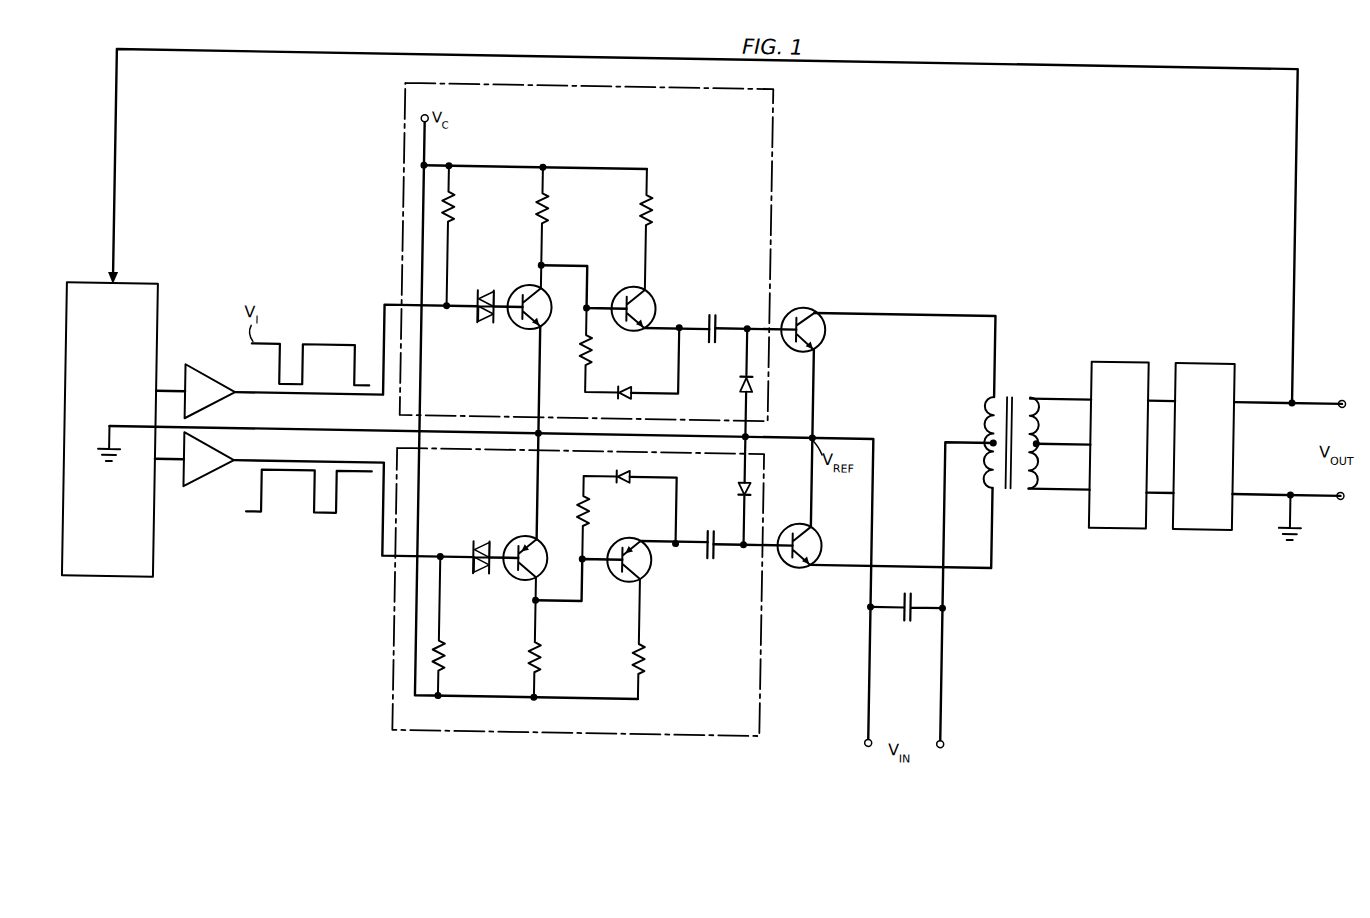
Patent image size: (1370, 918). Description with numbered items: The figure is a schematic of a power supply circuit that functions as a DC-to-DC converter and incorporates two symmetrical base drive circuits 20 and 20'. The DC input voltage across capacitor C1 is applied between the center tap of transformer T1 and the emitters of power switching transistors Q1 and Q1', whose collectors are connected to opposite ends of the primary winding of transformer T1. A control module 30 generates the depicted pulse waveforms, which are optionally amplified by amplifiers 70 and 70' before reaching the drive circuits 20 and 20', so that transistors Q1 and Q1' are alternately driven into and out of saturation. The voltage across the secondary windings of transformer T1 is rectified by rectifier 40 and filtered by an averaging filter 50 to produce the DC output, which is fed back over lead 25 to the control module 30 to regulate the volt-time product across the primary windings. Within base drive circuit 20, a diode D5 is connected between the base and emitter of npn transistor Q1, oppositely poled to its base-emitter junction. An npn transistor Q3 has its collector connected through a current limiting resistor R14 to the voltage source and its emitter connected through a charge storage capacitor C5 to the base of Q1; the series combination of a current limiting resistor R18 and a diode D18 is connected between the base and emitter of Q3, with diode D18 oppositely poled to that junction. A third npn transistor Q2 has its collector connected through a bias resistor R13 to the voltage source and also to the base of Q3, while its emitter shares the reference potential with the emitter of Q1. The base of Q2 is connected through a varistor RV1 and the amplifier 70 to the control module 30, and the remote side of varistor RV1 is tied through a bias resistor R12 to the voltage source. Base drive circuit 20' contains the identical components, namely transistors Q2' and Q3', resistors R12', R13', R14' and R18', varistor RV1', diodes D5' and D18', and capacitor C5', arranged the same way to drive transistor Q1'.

The base drive circuit 20 is at (618, 302).
The base drive circuit 20' is at (604, 603).
The lead 25 is at (970, 59).
The control module 30 is at (148, 293).
The rectifier 40 is at (1118, 522).
The averaging filter 50 is at (1204, 522).
The amplifier 70 is at (205, 392).
The amplifier 70' is at (200, 467).
The power switching transistor Q1 is at (803, 316).
The power switching transistor Q1' is at (821, 545).
The npn transistor Q2 is at (524, 296).
The npn transistor Q2' is at (514, 570).
The npn transistor Q3 is at (648, 296).
The npn transistor Q3' is at (647, 569).
The bias resistor R12 is at (466, 236).
The bias resistor R12' is at (459, 627).
The bias resistor R13 is at (559, 216).
The bias resistor R13' is at (555, 649).
The current limiting resistor R14 is at (664, 230).
The current limiting resistor R14' is at (659, 639).
The current limiting resistor R18 is at (603, 350).
The current limiting resistor R18' is at (603, 518).
The varistor RV1 is at (483, 324).
The varistor RV1' is at (479, 536).
The diode D5 is at (733, 382).
The diode D5' is at (732, 490).
The diode D18 is at (648, 371).
The diode D18' is at (648, 500).
The capacitor C5 is at (727, 312).
The capacitor C5' is at (725, 562).
The capacitor C1 is at (906, 619).
The transformer T1 is at (1010, 440).